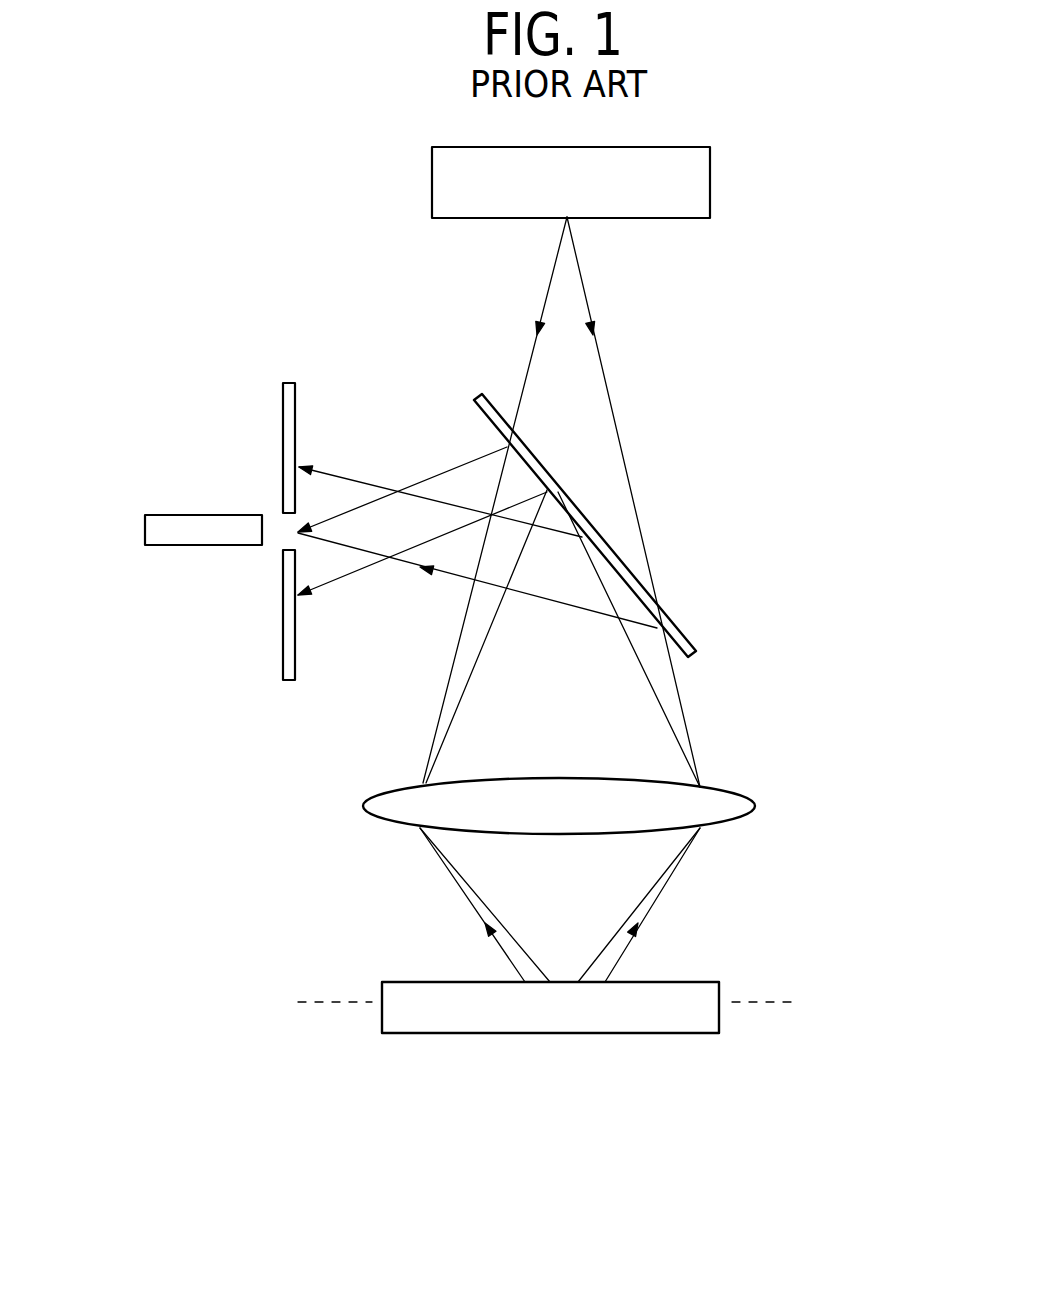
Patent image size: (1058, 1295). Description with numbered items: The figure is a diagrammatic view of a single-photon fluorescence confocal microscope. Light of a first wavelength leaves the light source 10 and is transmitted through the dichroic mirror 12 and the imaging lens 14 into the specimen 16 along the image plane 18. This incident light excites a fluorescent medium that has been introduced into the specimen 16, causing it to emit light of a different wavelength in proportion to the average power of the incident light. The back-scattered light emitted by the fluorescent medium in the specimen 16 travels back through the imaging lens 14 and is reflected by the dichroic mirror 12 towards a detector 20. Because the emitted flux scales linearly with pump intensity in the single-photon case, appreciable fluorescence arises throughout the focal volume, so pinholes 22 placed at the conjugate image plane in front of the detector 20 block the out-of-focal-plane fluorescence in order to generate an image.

The light source 10 is at (710, 170).
The dichroic mirror 12 is at (690, 644).
The imaging lens 14 is at (747, 797).
The specimen 16 is at (568, 1033).
The image plane 18 is at (767, 991).
The detector 20 is at (202, 545).
The pinholes 22 is at (295, 405).